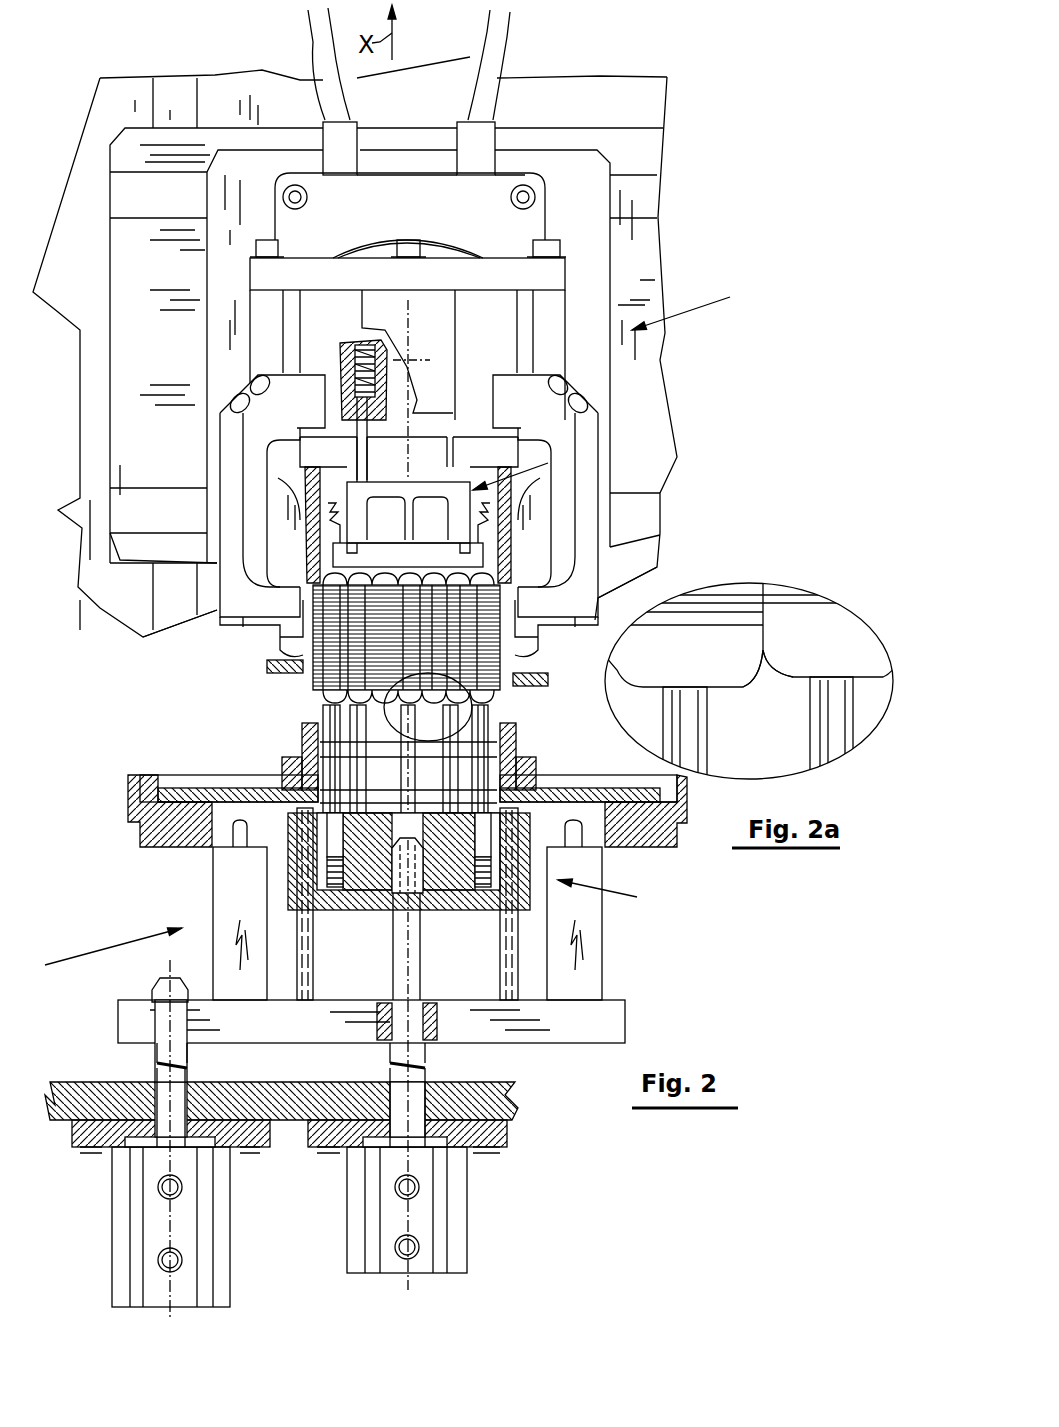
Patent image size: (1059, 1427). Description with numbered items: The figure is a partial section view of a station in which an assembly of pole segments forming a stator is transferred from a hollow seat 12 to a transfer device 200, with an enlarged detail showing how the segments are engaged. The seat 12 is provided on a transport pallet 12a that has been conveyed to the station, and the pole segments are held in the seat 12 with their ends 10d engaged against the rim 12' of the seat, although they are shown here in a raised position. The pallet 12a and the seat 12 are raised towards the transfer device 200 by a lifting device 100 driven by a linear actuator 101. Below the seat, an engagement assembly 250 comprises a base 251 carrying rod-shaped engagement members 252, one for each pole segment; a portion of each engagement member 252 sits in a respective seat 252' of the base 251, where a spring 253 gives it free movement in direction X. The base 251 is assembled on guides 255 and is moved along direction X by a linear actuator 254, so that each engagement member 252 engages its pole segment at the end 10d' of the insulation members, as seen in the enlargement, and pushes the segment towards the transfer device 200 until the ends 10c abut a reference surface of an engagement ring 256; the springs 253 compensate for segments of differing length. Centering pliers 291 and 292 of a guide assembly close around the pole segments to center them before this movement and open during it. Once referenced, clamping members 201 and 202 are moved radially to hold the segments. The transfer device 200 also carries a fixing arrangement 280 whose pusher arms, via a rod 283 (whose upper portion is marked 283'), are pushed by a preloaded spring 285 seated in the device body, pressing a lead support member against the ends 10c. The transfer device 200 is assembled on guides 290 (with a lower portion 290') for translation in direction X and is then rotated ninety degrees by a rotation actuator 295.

In FIG. 2, the guides 290 is at (355, 324).
In FIG. 2, the housing lower portion 290' is at (145, 600).
In FIG. 2, the rotation actuator 295 is at (488, 197).
In FIG. 2, the transfer device 200 is at (684, 285).
In FIG. 2, the preloaded spring 285 is at (356, 355).
In FIG. 2, the shaft upper portion 283' is at (322, 435).
In FIG. 2, the rod 283 is at (335, 459).
In FIG. 2, the fixing arrangement 280 is at (548, 463).
In FIG. 2, the engagement ring 256 is at (300, 575).
In FIG. 2, the clamping member 202 is at (230, 602).
In FIG. 2, the clamping member 201 is at (572, 602).
In FIG. 2, the centering plier 292 is at (286, 676).
In FIG. 2, the centering plier 291 is at (526, 678).
In FIG. 2, the ends of pole segments 10c is at (597, 600).
In FIG. 2, the ends of pole segments 10d is at (460, 743).
In FIG. 2A, the ends of pole segments 10d is at (750, 656).
In FIG. 2A, the end of insulation members 10d' is at (762, 696).
In FIG. 2, the engagement member 252 is at (503, 772).
In FIG. 2A, the engagement member 252 is at (758, 732).
In FIG. 2, the rim of seat 12' is at (363, 753).
In FIG. 2, the seat 12 is at (408, 776).
In FIG. 2, the transport pallet 12a is at (167, 833).
In FIG. 2, the lifting device 100 is at (113, 946).
In FIG. 2, the base 251 is at (373, 868).
In FIG. 2, the seat of base 252' is at (408, 880).
In FIG. 2, the spring 253 is at (482, 891).
In FIG. 2, the guides 255 is at (300, 968).
In FIG. 2, the engagement assembly 250 is at (612, 897).
In FIG. 2, the linear actuator 101 is at (180, 1218).
In FIG. 2, the linear actuator 254 is at (420, 1218).